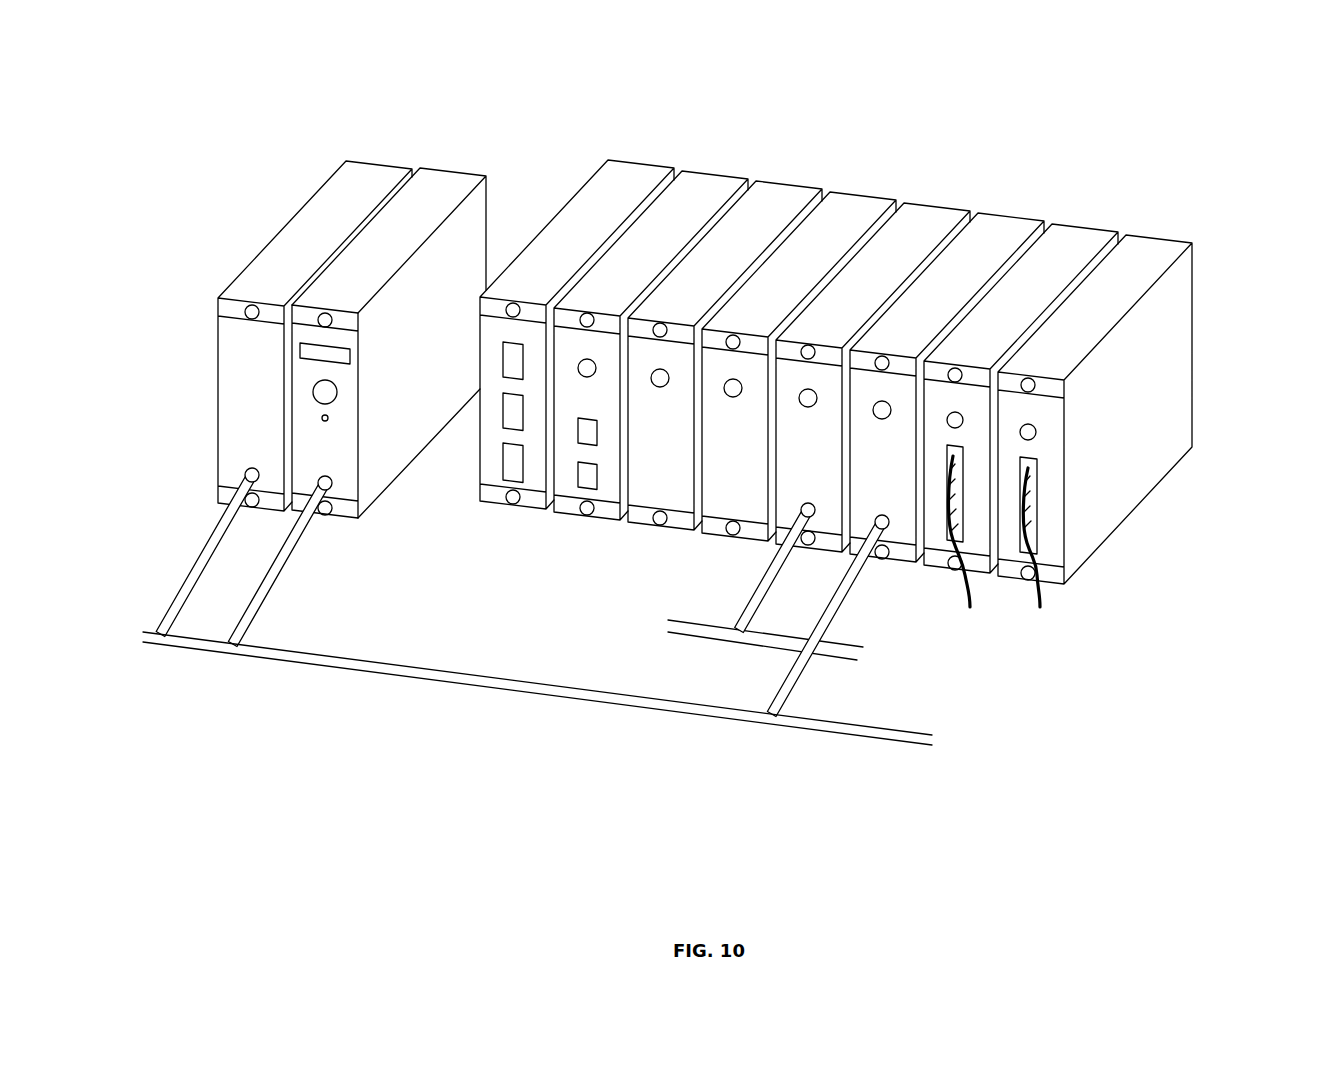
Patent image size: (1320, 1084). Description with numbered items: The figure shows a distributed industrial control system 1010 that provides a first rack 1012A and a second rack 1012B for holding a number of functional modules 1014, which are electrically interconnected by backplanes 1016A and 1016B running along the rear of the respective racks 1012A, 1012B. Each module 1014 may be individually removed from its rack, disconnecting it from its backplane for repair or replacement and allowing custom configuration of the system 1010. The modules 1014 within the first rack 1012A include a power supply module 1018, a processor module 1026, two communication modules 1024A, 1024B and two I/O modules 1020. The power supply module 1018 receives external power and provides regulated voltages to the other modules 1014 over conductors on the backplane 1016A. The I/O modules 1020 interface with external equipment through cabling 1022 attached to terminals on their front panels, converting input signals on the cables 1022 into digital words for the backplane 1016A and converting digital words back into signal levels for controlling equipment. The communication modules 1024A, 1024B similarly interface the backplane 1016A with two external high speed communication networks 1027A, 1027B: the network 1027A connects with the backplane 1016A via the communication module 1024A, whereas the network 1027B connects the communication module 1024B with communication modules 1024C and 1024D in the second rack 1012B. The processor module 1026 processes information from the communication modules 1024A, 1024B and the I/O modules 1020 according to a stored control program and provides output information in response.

The distributed industrial control system 1010 is at (1071, 821).
The first rack 1012A is at (1095, 513).
The second rack 1012B is at (448, 413).
The functional modules 1014 is at (792, 375).
The backplane 1016A is at (1187, 152).
The backplane 1016B is at (516, 101).
The power supply module 1018 is at (497, 478).
The I/O modules 1020 is at (1045, 470).
The cabling 1022 is at (972, 607).
The communication module 1024A is at (817, 383).
The communication module 1024B is at (898, 393).
The communication module 1024C is at (240, 438).
The communication module 1024D is at (342, 483).
The processor module 1026 is at (572, 485).
The high speed communication network 1027A is at (677, 620).
The high speed communication network 1027B is at (373, 660).